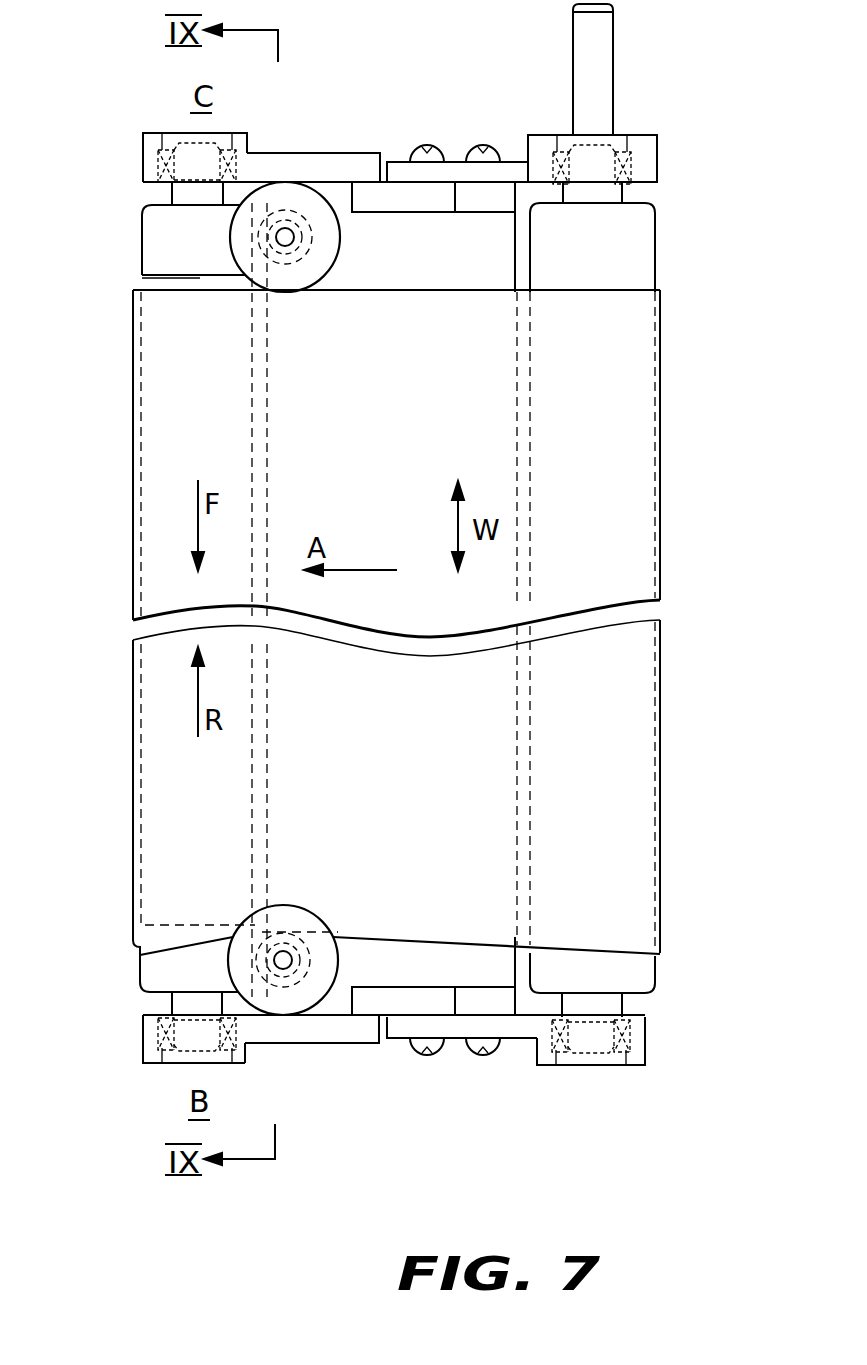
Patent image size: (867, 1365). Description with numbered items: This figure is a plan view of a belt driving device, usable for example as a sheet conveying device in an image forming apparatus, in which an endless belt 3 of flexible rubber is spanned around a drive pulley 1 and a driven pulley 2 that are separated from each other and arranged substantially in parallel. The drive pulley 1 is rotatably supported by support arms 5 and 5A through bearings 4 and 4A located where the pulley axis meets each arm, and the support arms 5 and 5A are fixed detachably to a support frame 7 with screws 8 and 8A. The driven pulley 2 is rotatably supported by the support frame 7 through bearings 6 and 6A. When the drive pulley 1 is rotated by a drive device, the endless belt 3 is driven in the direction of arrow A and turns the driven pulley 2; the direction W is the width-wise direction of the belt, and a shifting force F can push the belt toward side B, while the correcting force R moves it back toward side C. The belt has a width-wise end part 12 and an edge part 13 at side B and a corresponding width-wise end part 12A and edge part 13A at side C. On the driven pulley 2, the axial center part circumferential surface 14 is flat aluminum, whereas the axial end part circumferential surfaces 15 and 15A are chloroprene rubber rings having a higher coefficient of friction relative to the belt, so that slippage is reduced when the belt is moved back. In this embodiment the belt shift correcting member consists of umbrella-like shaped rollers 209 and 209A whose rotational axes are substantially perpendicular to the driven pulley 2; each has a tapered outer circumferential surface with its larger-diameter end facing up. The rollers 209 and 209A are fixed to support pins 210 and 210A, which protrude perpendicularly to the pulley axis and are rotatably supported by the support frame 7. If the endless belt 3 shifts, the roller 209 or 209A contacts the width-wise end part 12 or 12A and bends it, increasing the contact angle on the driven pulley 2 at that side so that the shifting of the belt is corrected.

The drive pulley 1 is at (655, 258).
The driven pulley 2 is at (140, 407).
The endless belt 3 is at (662, 474).
The bearing 4 is at (630, 1033).
The bearing 4A is at (630, 167).
The support arm 5 is at (508, 1036).
The support arm 5A is at (509, 163).
The bearing 6 is at (155, 1030).
The bearing 6A is at (158, 147).
The support frame 7 is at (350, 180).
The screw 8 is at (483, 1057).
The screw 8A is at (483, 150).
The width-wise end part 12 is at (158, 937).
The width-wise end part 12A is at (157, 315).
The edge part 13 is at (215, 947).
The edge part 13A is at (178, 287).
The axial center part circumferential surface 14 is at (140, 567).
The axial end part circumferential surface 15 is at (132, 945).
The axial end part circumferential surface 15A is at (148, 232).
The umbrella-like shaped roller 209 is at (298, 908).
The umbrella-like shaped roller 209A is at (340, 241).
The support pin 210 is at (290, 962).
The support pin 210A is at (291, 242).